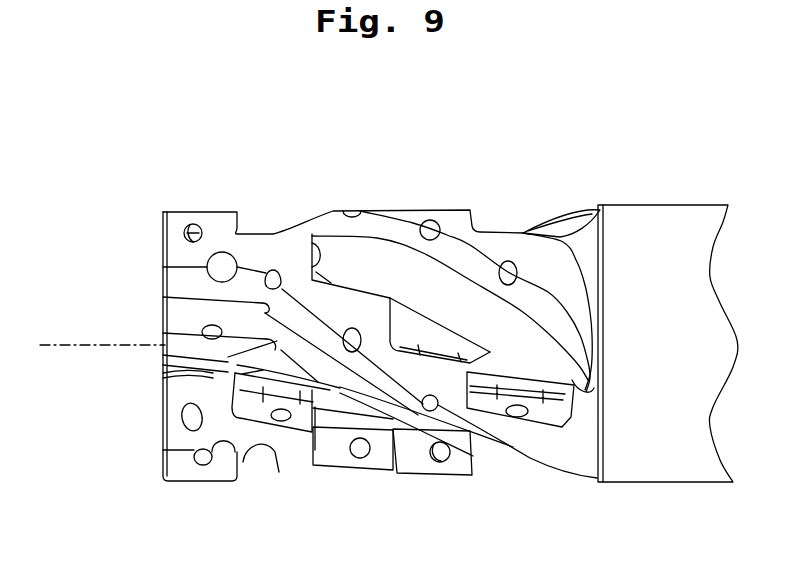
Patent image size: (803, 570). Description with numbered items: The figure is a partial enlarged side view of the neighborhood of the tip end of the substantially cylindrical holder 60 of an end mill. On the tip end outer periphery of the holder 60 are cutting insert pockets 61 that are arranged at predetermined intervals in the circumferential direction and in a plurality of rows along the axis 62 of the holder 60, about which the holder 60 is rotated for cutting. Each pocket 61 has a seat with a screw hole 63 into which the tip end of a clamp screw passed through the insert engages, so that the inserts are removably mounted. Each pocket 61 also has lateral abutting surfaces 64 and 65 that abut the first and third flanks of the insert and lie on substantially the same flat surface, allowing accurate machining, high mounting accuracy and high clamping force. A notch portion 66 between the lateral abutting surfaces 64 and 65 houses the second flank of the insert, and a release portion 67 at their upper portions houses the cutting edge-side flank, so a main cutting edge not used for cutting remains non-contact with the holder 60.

The holder 60 is at (635, 222).
The cutting insert pocket 61 is at (280, 207).
The axis 62 is at (76, 345).
The screw hole 63 is at (283, 421).
The lateral abutting surface 64 is at (213, 425).
The lateral abutting surface 65 is at (318, 443).
The notch portion 66 is at (234, 448).
The release portion 67 is at (213, 373).